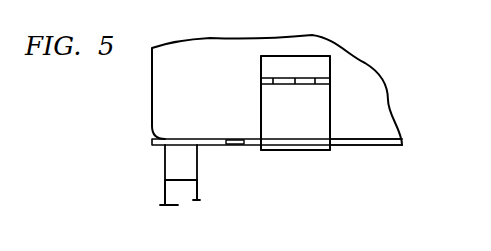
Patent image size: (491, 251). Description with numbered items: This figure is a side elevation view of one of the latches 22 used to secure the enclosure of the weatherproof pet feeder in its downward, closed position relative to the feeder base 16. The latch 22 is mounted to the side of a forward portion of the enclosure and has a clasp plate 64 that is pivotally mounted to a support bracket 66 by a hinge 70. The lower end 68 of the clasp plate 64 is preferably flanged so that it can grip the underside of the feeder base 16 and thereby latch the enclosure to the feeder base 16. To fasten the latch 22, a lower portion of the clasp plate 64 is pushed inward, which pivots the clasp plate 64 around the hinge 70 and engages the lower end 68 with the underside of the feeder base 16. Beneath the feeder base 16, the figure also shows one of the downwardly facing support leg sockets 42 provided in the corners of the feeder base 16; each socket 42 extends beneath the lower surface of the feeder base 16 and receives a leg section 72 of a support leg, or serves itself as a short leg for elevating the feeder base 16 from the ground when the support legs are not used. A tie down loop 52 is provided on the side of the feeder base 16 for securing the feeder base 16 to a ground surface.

The feeder base 16 is at (150, 141).
The latch 22 is at (292, 140).
The support leg socket 42 is at (190, 162).
The tie down loop 52 is at (238, 138).
The clasp plate 64 is at (320, 117).
The support bracket 66 is at (325, 63).
The lower end of the clasp plate 68 is at (320, 152).
The hinge 70 is at (327, 82).
The leg section 72 is at (173, 194).